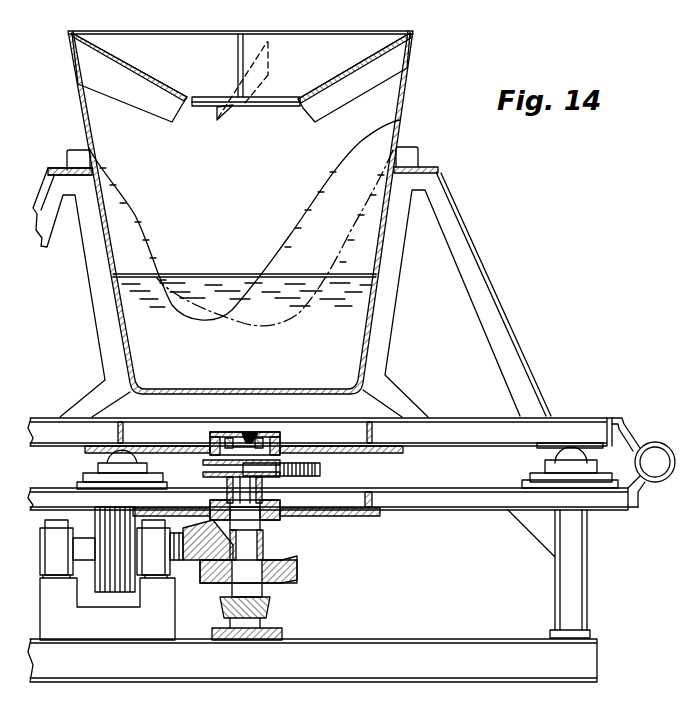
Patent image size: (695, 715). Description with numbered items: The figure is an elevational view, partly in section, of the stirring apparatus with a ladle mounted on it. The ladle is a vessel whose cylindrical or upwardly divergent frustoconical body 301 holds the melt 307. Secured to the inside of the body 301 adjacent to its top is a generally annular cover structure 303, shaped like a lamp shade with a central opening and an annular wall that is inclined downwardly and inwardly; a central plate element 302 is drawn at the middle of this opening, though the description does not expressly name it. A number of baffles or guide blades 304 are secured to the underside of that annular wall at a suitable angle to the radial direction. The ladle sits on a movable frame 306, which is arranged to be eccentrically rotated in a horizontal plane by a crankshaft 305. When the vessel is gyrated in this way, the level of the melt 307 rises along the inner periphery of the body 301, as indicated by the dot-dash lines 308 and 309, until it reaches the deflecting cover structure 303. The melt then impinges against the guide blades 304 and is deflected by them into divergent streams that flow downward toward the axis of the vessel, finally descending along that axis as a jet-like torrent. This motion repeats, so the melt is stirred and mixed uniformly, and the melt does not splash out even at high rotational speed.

The body 301 is at (292, 224).
The distributor plate 302 is at (282, 108).
The annular cover structure 303 is at (345, 78).
The guide blades 304 is at (141, 104).
The crankshaft 305 is at (269, 402).
The movable frame 306 is at (485, 393).
The melt 307 is at (202, 257).
The dot-dash line 308 is at (290, 233).
The dot-dash line 309 is at (342, 230).